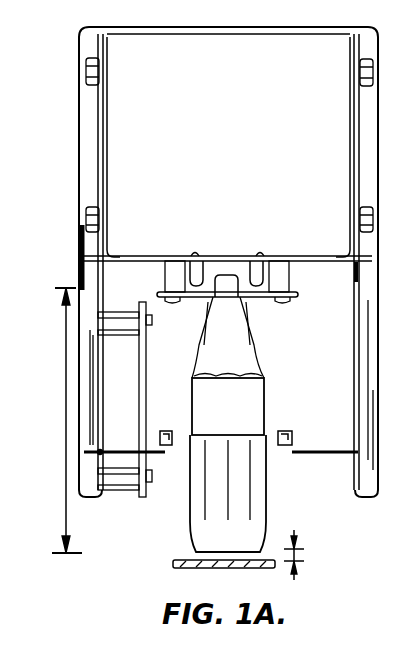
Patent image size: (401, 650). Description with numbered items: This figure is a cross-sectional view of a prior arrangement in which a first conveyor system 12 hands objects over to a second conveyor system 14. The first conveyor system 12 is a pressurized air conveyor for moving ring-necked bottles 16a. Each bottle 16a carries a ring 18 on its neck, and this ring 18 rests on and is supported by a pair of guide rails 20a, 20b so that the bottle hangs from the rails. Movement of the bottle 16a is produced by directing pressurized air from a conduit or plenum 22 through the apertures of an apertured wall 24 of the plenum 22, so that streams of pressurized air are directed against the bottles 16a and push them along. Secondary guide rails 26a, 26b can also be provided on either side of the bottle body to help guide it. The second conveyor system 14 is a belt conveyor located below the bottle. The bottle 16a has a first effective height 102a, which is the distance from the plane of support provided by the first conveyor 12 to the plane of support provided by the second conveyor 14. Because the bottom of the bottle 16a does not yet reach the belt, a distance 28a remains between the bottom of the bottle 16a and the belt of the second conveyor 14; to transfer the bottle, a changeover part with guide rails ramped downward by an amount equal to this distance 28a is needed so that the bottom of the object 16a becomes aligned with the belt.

The first conveyor system 12 is at (76, 163).
The plenum 22 is at (268, 80).
The apertured wall 24 is at (203, 251).
The guide rail 20a is at (198, 302).
The guide rail 20b is at (265, 300).
The ring 18 is at (252, 330).
The ring-necked bottle 16a is at (260, 424).
The secondary guide rail 26a is at (176, 416).
The secondary guide rail 26b is at (283, 431).
The second conveyor system 14 is at (173, 565).
The first effective height 102a is at (66, 420).
The distance 28a is at (298, 555).